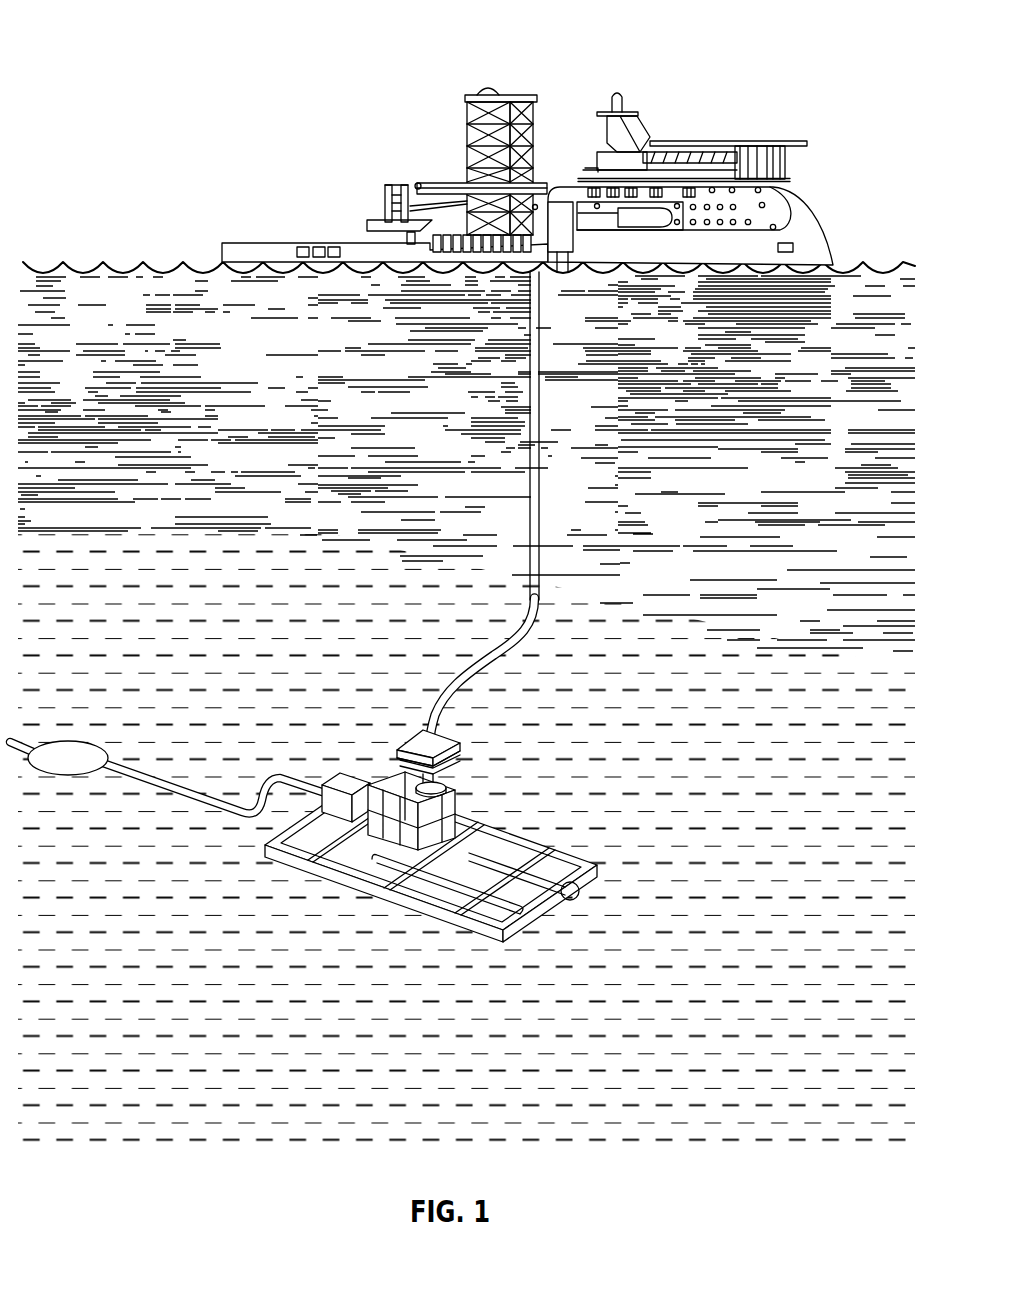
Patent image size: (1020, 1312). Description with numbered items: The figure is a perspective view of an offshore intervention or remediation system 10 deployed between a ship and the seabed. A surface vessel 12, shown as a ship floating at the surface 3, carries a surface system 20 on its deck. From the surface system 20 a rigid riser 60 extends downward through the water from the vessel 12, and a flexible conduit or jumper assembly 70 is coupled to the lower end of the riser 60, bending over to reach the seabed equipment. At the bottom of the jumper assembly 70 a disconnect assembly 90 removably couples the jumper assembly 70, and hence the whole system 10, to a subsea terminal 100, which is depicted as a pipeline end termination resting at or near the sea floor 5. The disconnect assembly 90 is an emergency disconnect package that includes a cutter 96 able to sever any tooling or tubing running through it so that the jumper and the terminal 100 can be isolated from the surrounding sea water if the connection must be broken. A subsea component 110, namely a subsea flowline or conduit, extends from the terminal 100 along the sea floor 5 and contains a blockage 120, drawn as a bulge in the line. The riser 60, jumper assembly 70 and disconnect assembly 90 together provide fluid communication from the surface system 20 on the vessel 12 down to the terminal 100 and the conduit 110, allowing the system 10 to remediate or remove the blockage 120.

The offshore intervention or remediation system 10 is at (462, 579).
The surface vessel 12 is at (527, 180).
The surface system 20 is at (347, 229).
The surface 3 is at (877, 262).
The rigid riser 60 is at (540, 497).
The flexible conduit or jumper assembly 70 is at (536, 617).
The disconnect assembly 90 is at (398, 734).
The cutter 96 is at (462, 742).
The subsea terminal 100 is at (591, 880).
The sea floor 5 is at (683, 860).
The subsea component 110 is at (150, 782).
The blockage 120 is at (66, 748).